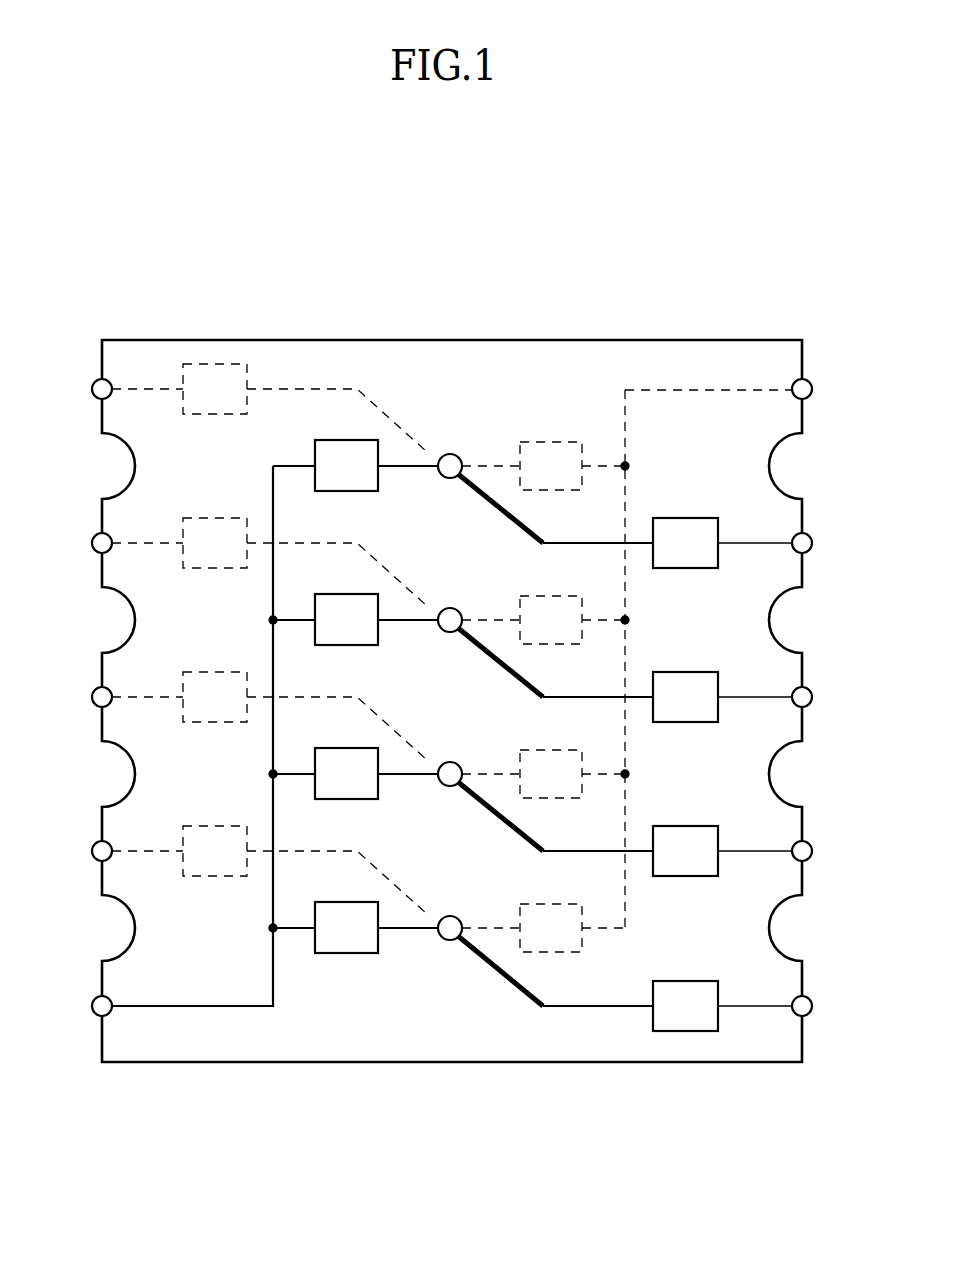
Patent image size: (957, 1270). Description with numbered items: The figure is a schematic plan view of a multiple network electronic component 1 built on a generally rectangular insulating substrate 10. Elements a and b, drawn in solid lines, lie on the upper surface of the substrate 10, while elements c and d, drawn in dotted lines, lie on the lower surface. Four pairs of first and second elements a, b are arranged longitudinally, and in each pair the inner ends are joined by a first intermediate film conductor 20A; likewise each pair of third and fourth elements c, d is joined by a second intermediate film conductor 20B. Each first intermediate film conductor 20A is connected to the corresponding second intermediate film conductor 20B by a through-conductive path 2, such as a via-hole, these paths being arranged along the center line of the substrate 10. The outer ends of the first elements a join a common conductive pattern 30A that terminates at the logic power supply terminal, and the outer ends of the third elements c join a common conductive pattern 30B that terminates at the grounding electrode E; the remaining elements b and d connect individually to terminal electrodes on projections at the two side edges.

The multiple network electronic component 1 is at (385, 308).
The insulating substrate 10 is at (491, 340).
The through-conductive path 2 is at (448, 478).
The first intermediate film conductor 20A is at (478, 470).
The second intermediate film conductor 20B is at (480, 770).
The common conductive pattern 30A is at (273, 800).
The common conductive pattern 30B is at (632, 650).
The grounding electrode E is at (708, 371).